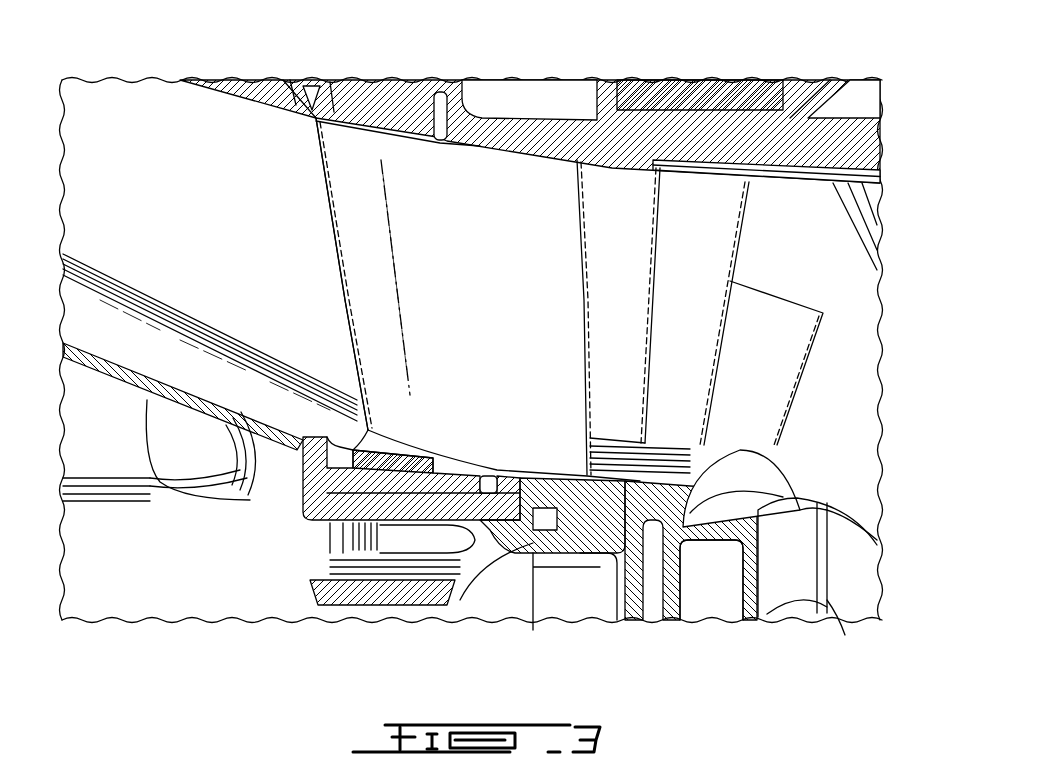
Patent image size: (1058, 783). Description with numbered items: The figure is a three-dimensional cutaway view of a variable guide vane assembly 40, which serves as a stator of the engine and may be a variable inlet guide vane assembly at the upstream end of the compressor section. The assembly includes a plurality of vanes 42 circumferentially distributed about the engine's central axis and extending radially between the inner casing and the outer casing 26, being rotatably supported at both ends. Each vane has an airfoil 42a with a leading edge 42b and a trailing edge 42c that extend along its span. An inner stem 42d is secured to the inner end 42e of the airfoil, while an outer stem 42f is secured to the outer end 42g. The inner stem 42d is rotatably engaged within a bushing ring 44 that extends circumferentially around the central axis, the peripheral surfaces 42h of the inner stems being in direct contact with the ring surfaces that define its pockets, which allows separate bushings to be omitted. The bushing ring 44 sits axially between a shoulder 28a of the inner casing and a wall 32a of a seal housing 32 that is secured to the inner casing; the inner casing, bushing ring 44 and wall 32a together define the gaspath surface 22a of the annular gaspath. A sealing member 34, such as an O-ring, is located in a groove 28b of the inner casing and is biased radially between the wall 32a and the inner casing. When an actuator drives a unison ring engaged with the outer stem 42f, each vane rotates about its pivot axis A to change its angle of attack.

The variable guide vane assembly 40 is at (244, 245).
The outer casing 26 is at (657, 123).
The gaspath surface 22a is at (90, 320).
The vanes 42 is at (705, 253).
The airfoil 42a is at (469, 263).
The leading edge 42b is at (347, 290).
The trailing edge 42c is at (778, 435).
The inner stem 42d is at (366, 468).
The inner end 42e is at (308, 514).
The outer stem 42f is at (385, 98).
The outer end 42g is at (340, 97).
The peripheral surfaces 42h is at (488, 495).
The shoulder 28a is at (330, 430).
The groove 28b is at (560, 542).
The seal housing 32 is at (712, 598).
The wall 32a is at (607, 503).
The sealing member 34 is at (543, 532).
The bushing ring 44 is at (313, 478).
The pivot axis A is at (400, 312).